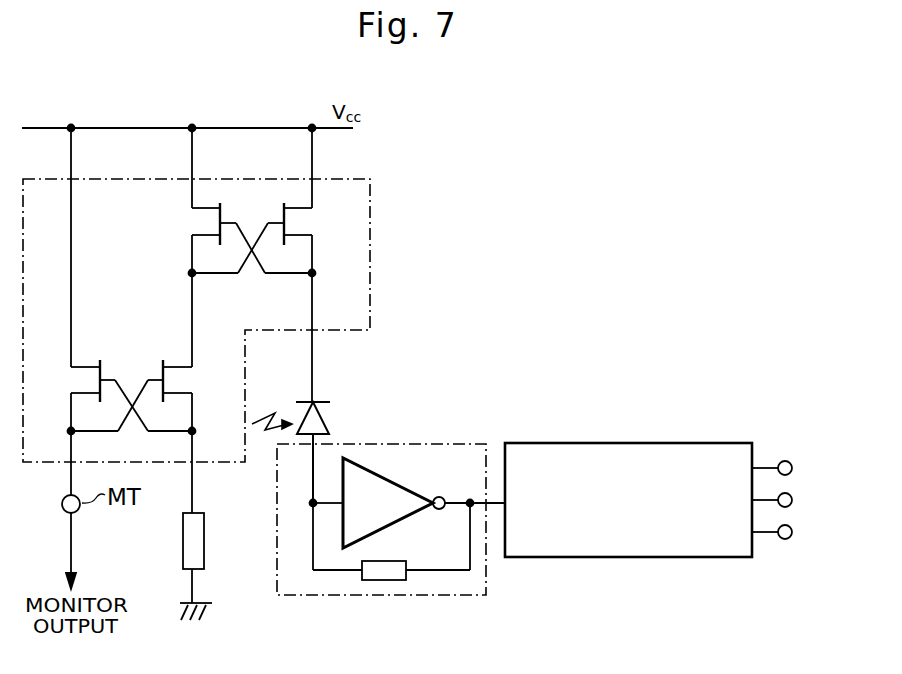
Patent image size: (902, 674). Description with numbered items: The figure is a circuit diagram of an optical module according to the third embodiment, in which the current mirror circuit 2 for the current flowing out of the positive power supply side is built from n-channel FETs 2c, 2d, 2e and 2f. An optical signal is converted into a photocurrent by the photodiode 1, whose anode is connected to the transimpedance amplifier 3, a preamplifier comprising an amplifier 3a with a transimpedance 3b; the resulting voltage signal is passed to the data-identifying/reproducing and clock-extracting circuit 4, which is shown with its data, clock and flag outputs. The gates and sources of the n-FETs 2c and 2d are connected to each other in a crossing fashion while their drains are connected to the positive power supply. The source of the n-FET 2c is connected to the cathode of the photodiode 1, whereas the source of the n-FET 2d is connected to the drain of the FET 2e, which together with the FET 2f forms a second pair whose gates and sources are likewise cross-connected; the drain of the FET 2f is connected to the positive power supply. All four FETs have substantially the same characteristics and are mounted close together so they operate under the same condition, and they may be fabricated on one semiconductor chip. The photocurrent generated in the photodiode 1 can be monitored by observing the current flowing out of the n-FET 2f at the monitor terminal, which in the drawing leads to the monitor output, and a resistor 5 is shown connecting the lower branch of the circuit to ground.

The photodiode 1 is at (333, 421).
The current mirror circuit 2 is at (372, 262).
The n-channel FET 2c is at (303, 224).
The n-channel FET 2d is at (212, 226).
The n-channel FET 2e is at (185, 381).
The n-channel FET 2f is at (90, 381).
The transimpedance amplifier 3 is at (437, 443).
The amplifier 3a is at (395, 479).
The transimpedance 3b is at (400, 561).
The data-identifying/reproducing and clock-extracting circuit 4 is at (630, 443).
The resistor 5 is at (206, 541).